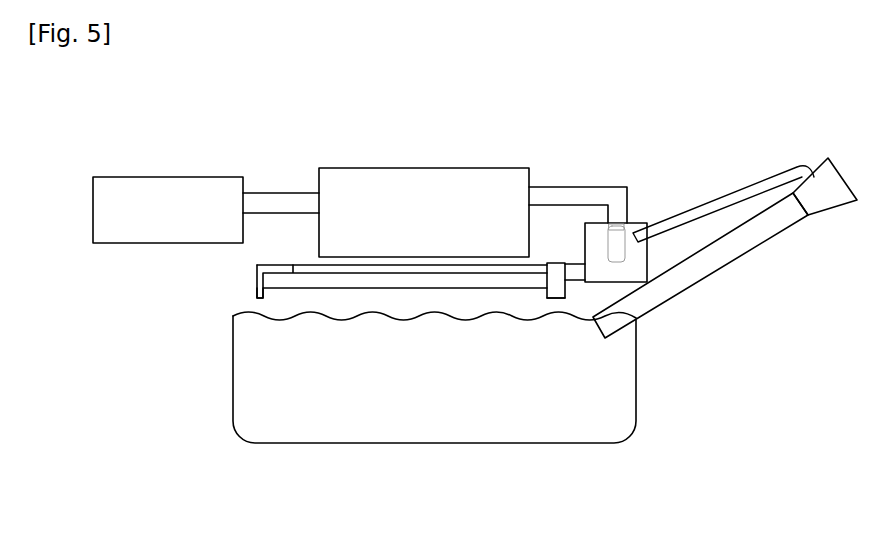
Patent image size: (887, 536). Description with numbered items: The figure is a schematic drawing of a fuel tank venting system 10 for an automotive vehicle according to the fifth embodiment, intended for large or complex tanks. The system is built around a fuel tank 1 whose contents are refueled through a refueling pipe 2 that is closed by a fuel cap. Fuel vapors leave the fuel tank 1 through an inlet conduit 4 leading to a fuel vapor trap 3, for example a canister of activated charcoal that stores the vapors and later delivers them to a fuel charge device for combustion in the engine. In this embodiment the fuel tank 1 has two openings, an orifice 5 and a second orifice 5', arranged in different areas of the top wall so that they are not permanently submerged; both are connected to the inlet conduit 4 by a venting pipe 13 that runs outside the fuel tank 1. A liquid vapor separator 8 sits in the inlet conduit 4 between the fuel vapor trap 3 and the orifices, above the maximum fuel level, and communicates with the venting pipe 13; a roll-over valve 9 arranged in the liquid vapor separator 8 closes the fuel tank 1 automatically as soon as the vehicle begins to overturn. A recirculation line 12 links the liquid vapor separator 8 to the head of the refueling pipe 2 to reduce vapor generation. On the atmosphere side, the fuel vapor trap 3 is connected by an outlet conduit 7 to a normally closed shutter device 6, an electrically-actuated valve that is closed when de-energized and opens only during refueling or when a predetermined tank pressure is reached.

The fuel tank 1 is at (627, 437).
The refueling pipe 2 is at (728, 267).
The fuel vapor trap 3 is at (418, 168).
The inlet conduit 4 is at (558, 263).
The orifice 5 is at (621, 379).
The second orifice 5' is at (200, 326).
The normally closed shutter device 6 is at (150, 176).
The outlet conduit 7 is at (288, 193).
The liquid vapor separator 8 is at (648, 242).
The roll-over valve 9 is at (652, 226).
The fuel tank venting system 10 is at (164, 407).
The recirculation line 12 is at (740, 189).
The venting pipe 13 is at (412, 268).